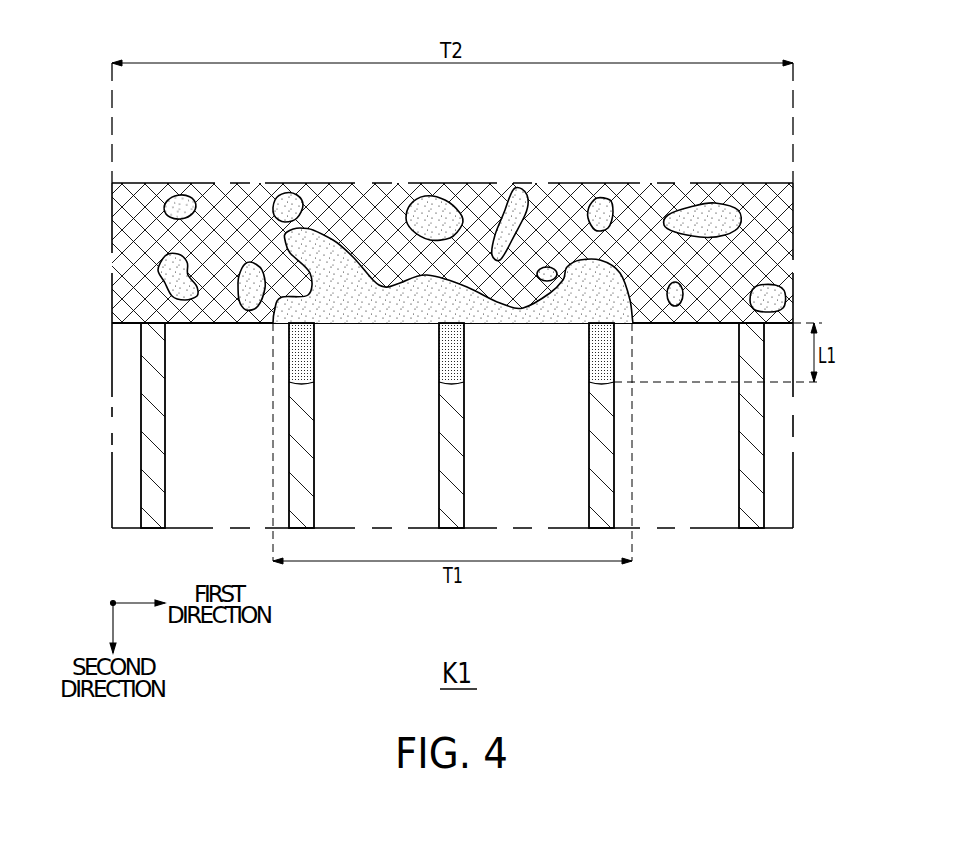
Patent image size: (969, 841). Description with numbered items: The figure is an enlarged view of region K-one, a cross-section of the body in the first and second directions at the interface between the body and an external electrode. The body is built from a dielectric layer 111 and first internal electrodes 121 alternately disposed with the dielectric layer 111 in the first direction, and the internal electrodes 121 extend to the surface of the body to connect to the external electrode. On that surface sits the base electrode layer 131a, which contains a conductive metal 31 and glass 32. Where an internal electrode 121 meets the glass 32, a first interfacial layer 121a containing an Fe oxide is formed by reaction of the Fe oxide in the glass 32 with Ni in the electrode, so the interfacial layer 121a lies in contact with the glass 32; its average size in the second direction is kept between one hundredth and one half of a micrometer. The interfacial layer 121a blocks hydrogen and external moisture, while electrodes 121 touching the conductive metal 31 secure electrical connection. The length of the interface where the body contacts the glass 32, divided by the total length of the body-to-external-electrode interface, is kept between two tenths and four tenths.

The base electrode layer 131a is at (397, 125).
The conductive metal 31 is at (330, 203).
The glass 32 is at (383, 303).
The first interfacial layer 121a is at (607, 360).
The dielectric layer 111 is at (660, 528).
The first internal electrode 121 is at (751, 528).